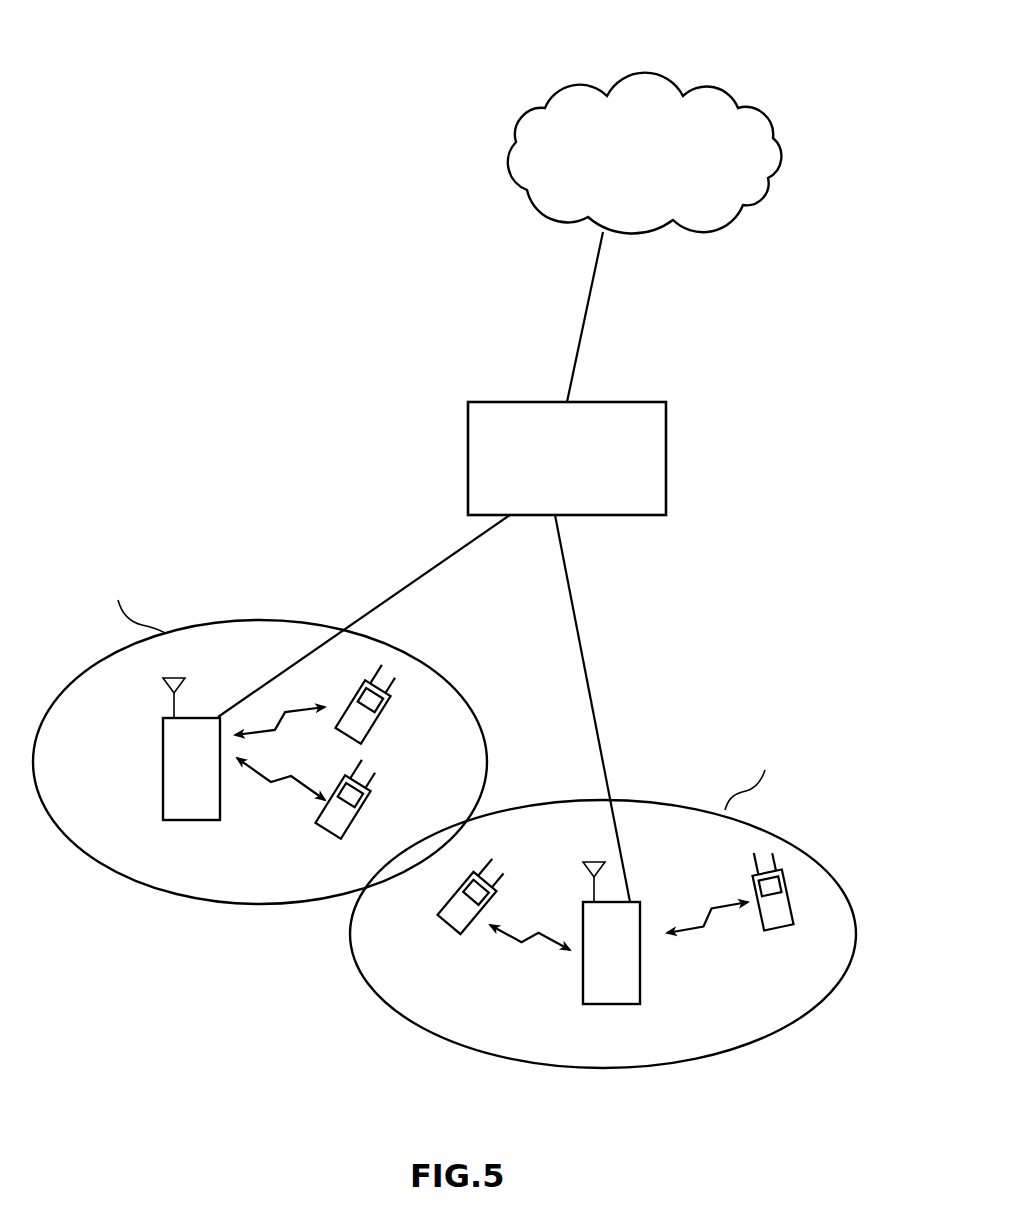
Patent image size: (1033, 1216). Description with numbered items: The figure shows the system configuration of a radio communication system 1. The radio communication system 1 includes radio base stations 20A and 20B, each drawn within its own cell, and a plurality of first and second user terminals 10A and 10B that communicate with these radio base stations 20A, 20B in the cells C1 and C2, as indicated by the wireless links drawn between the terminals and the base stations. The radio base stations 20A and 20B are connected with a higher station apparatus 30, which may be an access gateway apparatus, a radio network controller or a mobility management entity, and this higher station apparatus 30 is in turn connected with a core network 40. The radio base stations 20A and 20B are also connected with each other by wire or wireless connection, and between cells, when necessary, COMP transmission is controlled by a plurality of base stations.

The radio communication system 1 is at (299, 388).
The first user terminal 10A is at (378, 722).
The second user terminal 10B is at (360, 818).
The radio base station 20A is at (583, 990).
The radio base station 20B is at (163, 806).
The higher station apparatus 30 is at (666, 445).
The core network 40 is at (718, 86).